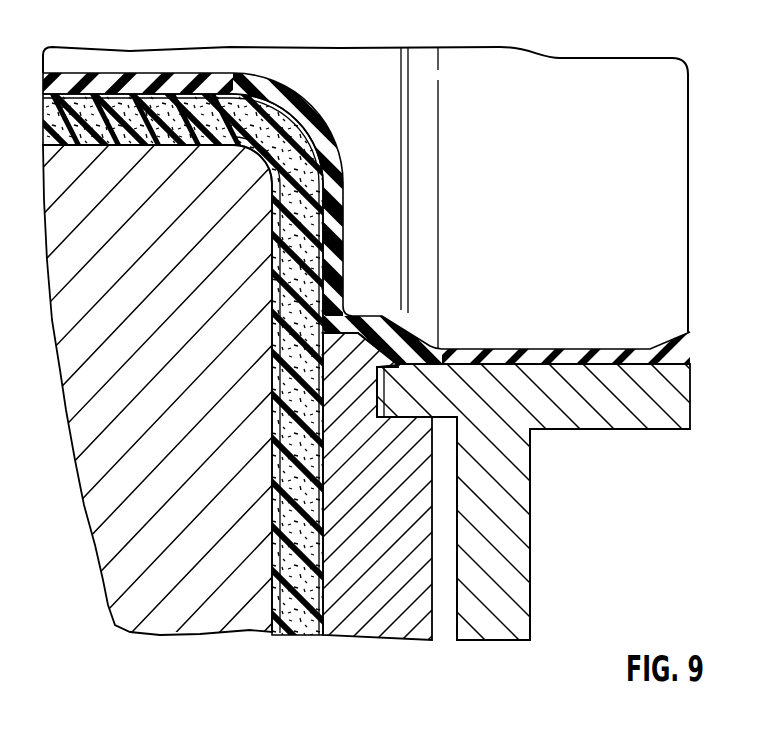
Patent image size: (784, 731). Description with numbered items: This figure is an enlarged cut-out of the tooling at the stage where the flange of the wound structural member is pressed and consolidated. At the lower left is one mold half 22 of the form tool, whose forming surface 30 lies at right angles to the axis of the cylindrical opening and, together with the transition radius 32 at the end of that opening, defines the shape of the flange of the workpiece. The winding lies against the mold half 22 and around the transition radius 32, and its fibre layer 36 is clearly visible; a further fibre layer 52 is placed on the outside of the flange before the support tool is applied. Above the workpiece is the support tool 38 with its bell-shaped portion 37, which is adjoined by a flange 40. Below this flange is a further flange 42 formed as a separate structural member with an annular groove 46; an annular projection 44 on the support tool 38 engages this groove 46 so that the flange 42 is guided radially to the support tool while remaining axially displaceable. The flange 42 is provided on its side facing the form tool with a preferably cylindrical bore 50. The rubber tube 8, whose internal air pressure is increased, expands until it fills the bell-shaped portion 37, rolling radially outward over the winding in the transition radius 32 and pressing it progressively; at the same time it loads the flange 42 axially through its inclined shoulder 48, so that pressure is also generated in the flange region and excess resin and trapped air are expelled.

The rubber tube 8 is at (580, 355).
The mold half 22 is at (98, 547).
The forming surface 30 is at (300, 243).
The transition radius 32 is at (250, 163).
The fibre layer 36 is at (279, 634).
The bell-shaped portion 37 is at (687, 381).
The support tool 38 is at (648, 431).
The flange 40 is at (519, 592).
The flange 42 is at (390, 628).
The annular projection 44 is at (420, 383).
The annular groove 46 is at (373, 394).
The inclined shoulder 48 is at (440, 285).
The cylindrical bore 50 is at (388, 330).
The further fibre layer 52 is at (322, 636).